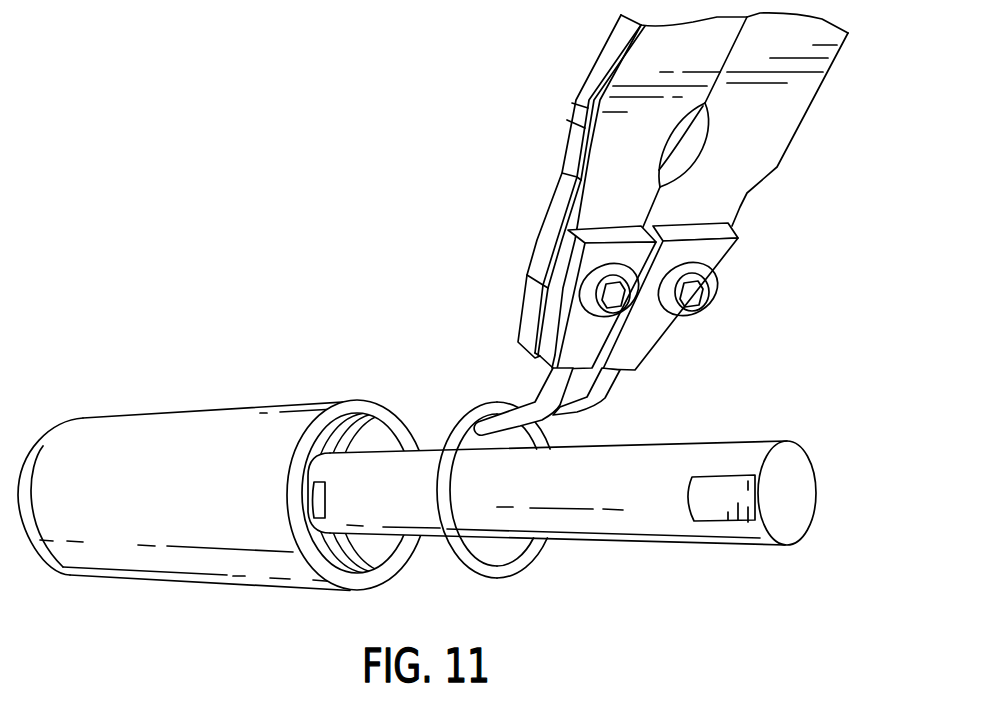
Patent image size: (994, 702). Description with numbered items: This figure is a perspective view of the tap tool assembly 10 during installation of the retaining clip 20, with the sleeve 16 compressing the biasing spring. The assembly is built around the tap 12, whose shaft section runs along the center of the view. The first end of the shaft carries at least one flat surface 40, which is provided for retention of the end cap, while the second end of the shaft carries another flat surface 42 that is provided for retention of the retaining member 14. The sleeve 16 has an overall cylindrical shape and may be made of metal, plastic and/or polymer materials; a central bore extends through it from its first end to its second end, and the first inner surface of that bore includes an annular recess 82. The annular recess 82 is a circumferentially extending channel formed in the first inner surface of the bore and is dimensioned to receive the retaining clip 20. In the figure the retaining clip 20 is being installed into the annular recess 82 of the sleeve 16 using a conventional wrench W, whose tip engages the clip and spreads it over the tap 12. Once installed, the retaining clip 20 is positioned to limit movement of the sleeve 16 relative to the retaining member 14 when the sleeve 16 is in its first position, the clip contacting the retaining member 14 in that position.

The tap tool assembly 10 is at (290, 348).
The tap 12 is at (645, 483).
The retaining member 14 is at (338, 442).
The sleeve 16 is at (145, 453).
The retaining clip 20 is at (517, 568).
The flat surface 40 is at (717, 503).
The flat surface 42 is at (313, 500).
The annular recess 82 is at (327, 550).
The wrench W is at (607, 163).